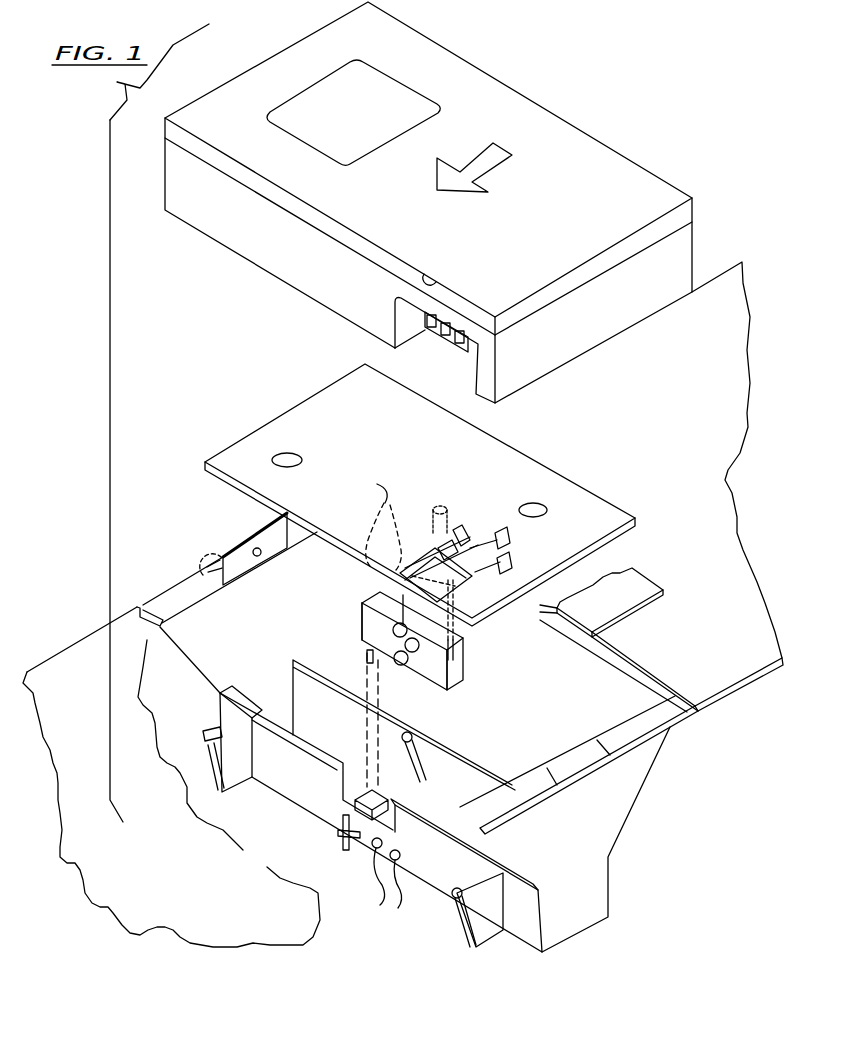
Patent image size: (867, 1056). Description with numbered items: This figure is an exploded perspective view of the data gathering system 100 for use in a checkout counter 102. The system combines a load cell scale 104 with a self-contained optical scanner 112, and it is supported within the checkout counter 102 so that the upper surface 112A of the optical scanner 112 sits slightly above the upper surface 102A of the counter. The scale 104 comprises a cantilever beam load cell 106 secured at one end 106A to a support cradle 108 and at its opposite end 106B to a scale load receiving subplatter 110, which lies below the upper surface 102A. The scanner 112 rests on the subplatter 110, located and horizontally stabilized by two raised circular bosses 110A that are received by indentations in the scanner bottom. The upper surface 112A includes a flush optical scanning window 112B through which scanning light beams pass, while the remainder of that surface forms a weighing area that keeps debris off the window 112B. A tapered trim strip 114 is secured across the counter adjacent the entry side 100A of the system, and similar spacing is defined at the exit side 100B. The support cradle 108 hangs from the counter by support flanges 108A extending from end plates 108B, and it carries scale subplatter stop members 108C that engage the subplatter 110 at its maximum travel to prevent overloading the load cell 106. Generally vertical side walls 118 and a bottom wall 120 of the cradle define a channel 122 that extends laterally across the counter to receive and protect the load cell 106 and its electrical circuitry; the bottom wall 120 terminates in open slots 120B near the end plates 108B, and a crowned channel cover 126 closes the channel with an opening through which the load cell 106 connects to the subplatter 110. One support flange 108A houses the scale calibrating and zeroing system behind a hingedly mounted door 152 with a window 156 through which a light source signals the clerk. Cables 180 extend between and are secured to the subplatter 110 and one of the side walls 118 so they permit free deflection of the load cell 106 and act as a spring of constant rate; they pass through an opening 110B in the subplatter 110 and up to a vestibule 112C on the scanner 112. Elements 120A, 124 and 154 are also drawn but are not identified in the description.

The data gathering system 100 is at (421, 207).
The entry side 100A is at (585, 128).
The exit side 100B is at (439, 283).
The checkout counter 102 is at (403, 488).
The upper surface of the checkout counter 102A is at (373, 780).
The load cell scale 104 is at (436, 639).
The cantilever beam load cell 106 is at (419, 694).
The one end of the load cell 106A is at (356, 637).
The opposite end of the load cell 106B is at (476, 640).
The support cradle 108 is at (414, 749).
The support flanges 108A is at (192, 592).
The end plates 108B is at (270, 622).
The scale subplatter stop members 108C is at (210, 730).
The scale load receiving subplatter 110 is at (436, 495).
The raised circular bosses 110A is at (293, 456).
The opening through the subplatter 110B is at (454, 574).
The self-contained optical scanner 112 is at (266, 262).
The upper surface of the optical scanner 112A is at (494, 98).
The optical scanning window 112B is at (398, 72).
The vestibule 112C is at (435, 357).
The tapered trim strip 114 is at (722, 693).
The side walls 118 is at (272, 782).
The bottom wall 120 is at (300, 712).
The channel ledge 120A is at (487, 773).
The open slots 120B is at (290, 716).
The channel 122 is at (440, 778).
The rod 124 is at (475, 636).
The crowned channel cover 126 is at (643, 580).
The hingedly mounted door 152 is at (208, 528).
The pivot 154 is at (176, 548).
The window 156 is at (256, 548).
The cables 180 is at (424, 694).